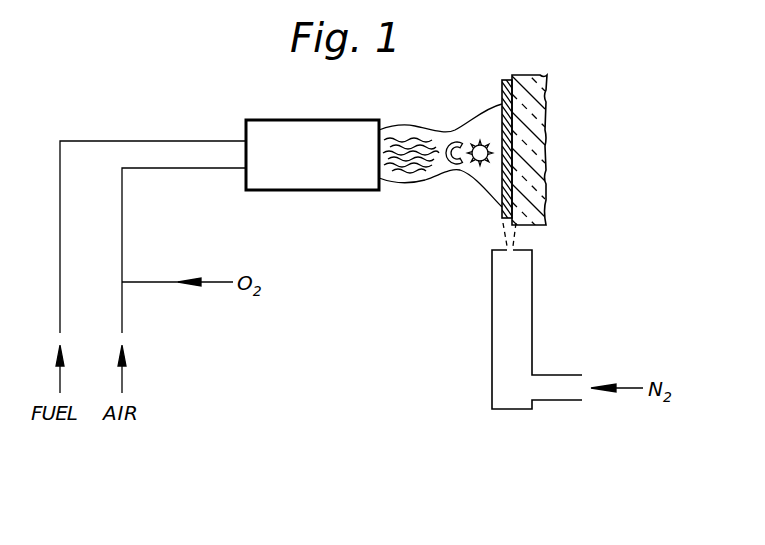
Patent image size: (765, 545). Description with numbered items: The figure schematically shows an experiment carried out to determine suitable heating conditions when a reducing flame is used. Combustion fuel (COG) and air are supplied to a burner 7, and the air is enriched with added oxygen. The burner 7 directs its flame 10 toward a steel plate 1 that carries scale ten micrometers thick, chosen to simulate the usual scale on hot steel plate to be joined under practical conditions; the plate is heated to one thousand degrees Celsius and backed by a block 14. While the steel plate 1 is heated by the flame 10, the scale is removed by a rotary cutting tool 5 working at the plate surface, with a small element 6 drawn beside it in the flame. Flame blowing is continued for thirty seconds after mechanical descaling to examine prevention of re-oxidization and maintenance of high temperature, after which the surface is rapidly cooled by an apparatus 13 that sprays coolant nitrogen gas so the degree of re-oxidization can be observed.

The steel plate 1 is at (505, 80).
The rotary cutting tool 5 is at (475, 167).
The shock front 6 is at (452, 140).
The burner 7 is at (310, 191).
The flame 10 is at (397, 147).
The apparatus for spraying coolant nitrogen gas 13 is at (532, 308).
The holder block 14 is at (546, 140).